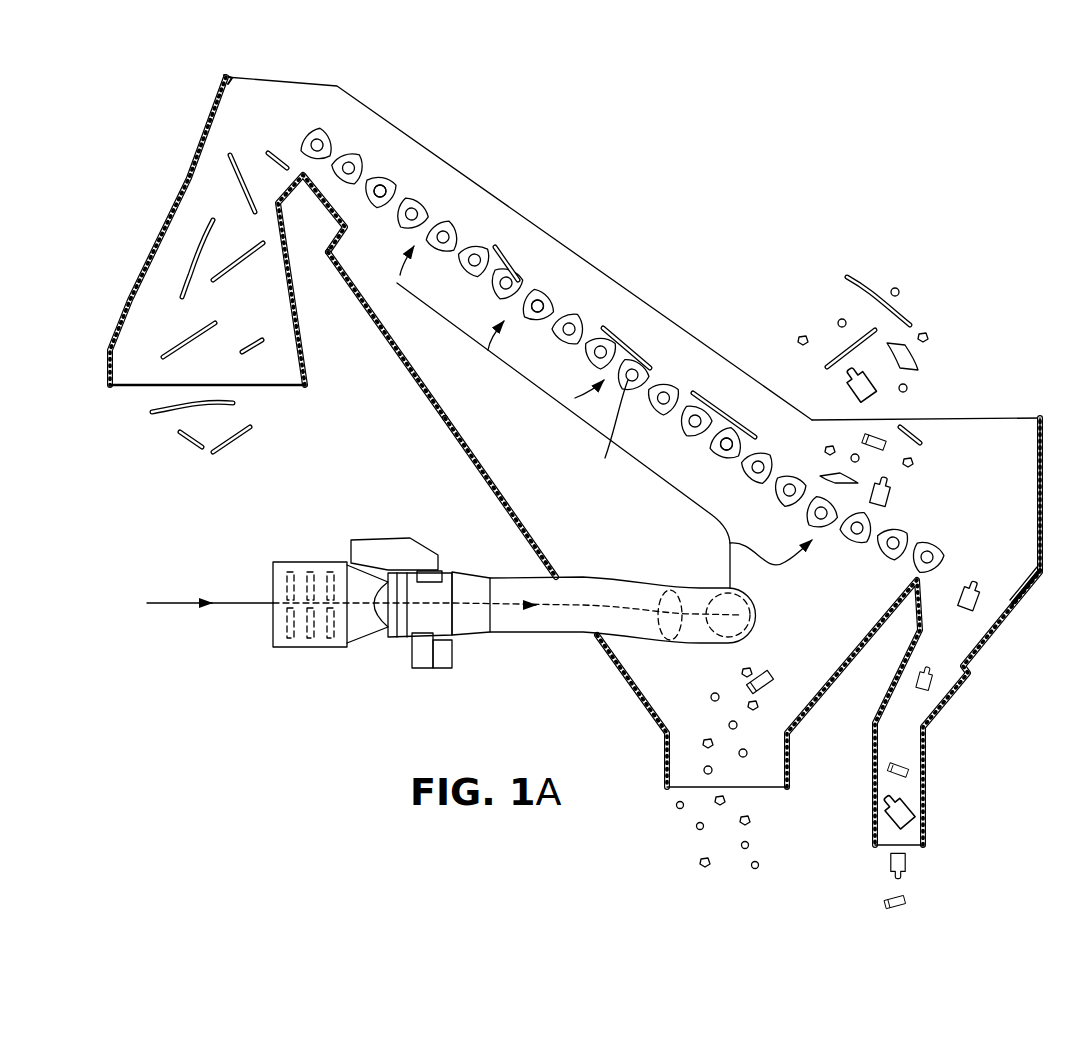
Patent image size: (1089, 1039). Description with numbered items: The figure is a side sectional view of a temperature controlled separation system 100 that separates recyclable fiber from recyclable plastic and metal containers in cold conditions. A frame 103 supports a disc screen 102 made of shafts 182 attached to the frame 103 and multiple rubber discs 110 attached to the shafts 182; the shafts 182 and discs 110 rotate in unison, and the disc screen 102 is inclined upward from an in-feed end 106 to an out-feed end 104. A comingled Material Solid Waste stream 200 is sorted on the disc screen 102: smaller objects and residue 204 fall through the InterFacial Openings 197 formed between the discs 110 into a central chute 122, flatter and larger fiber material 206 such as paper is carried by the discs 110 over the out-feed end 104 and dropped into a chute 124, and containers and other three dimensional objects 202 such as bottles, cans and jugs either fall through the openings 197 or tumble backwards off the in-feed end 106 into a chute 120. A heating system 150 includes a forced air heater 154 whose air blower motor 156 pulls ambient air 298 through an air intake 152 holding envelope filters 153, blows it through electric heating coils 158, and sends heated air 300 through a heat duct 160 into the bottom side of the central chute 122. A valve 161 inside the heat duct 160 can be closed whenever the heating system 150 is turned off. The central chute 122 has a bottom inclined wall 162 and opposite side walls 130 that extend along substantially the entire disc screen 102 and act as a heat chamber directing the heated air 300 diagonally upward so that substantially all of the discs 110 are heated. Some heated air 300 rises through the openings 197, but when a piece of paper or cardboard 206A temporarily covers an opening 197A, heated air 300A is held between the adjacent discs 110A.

The temperature controlled separation system 100 is at (748, 203).
The disc screen 102 is at (573, 297).
The frame 103 is at (1000, 418).
The out-feed end 104 is at (296, 110).
The in-feed end 106 is at (943, 519).
The discs 110 is at (427, 196).
The adjacent discs 110A is at (597, 330).
The chute 120 is at (925, 795).
The central chute 122 is at (642, 708).
The chute 124 is at (105, 352).
The side walls 130 is at (443, 375).
The heating system 150 is at (360, 601).
The air intake 152 is at (302, 562).
The envelope filters 153 is at (273, 583).
The forced air heater 154 is at (465, 655).
The air blower motor 156 is at (383, 637).
The electric heating coils 158 is at (422, 668).
The heat duct 160 is at (683, 645).
The valve 161 is at (690, 595).
The bottom inclined wall 162 is at (480, 470).
The shafts 182 is at (383, 188).
The InterFacial Openings (IFOs) 197 is at (483, 288).
The opening 197A is at (575, 398).
The Material Solid Waste (MSW) stream 200 is at (910, 272).
The containers and other three dimensional objects 202 is at (970, 590).
The smaller objects and residue 204 is at (705, 860).
The fiber material 206 is at (243, 176).
The paper or cardboard 206A is at (630, 340).
The ambient air 298 is at (180, 608).
The heated air 300 is at (690, 460).
The heated air 300A is at (602, 433).